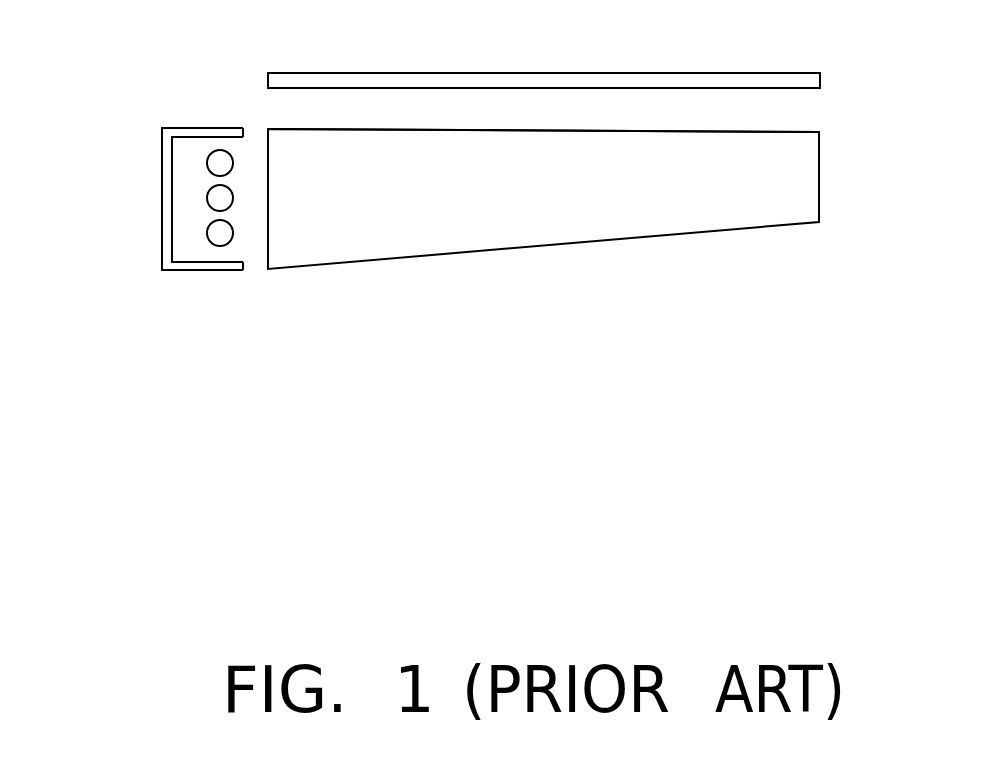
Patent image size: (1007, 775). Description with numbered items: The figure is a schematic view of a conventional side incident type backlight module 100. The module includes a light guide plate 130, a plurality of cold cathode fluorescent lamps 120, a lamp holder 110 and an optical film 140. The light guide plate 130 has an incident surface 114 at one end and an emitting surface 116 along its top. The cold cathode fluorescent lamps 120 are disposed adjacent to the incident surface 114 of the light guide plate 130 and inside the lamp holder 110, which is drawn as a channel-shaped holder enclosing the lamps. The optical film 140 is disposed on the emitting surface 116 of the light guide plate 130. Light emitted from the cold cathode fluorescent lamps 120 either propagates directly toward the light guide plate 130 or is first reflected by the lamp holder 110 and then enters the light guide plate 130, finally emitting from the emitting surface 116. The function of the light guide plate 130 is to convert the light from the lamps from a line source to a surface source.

The side incident type backlight module 100 is at (918, 360).
The lamp holder 110 is at (165, 210).
The incident surface 114 is at (268, 243).
The emitting surface 116 is at (806, 131).
The cold cathode fluorescent lamps 120 is at (206, 163).
The light guide plate 130 is at (802, 193).
The optical film 140 is at (820, 82).